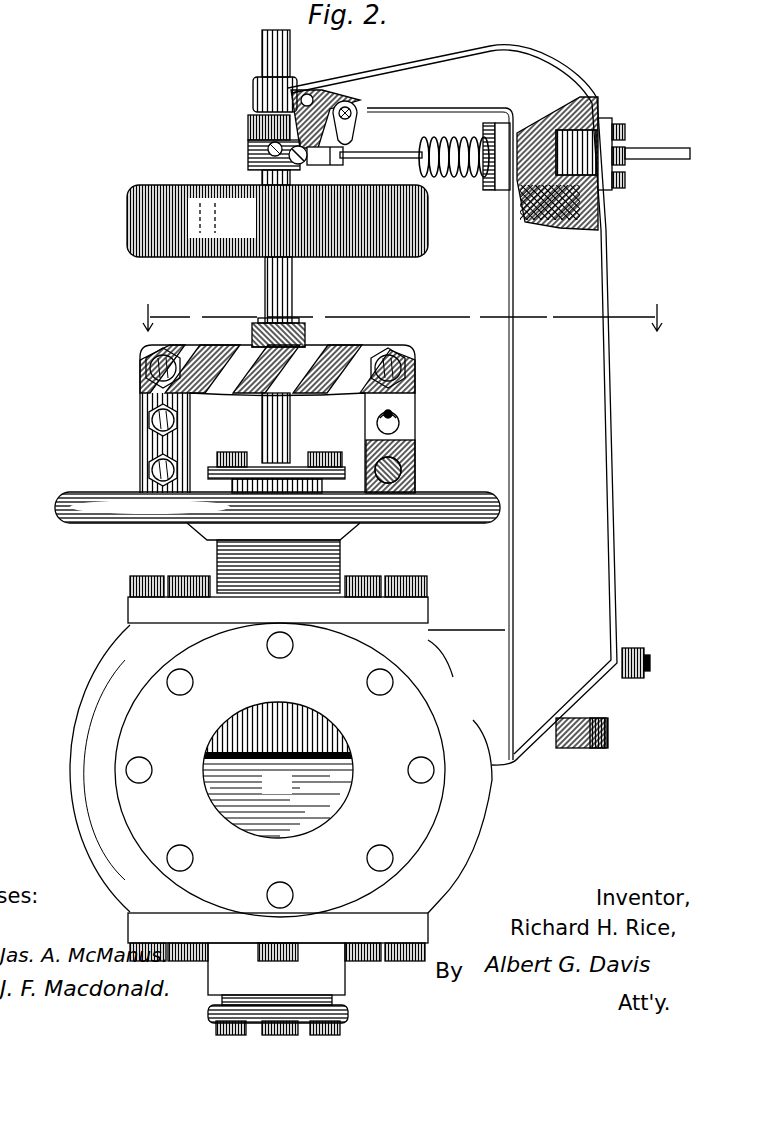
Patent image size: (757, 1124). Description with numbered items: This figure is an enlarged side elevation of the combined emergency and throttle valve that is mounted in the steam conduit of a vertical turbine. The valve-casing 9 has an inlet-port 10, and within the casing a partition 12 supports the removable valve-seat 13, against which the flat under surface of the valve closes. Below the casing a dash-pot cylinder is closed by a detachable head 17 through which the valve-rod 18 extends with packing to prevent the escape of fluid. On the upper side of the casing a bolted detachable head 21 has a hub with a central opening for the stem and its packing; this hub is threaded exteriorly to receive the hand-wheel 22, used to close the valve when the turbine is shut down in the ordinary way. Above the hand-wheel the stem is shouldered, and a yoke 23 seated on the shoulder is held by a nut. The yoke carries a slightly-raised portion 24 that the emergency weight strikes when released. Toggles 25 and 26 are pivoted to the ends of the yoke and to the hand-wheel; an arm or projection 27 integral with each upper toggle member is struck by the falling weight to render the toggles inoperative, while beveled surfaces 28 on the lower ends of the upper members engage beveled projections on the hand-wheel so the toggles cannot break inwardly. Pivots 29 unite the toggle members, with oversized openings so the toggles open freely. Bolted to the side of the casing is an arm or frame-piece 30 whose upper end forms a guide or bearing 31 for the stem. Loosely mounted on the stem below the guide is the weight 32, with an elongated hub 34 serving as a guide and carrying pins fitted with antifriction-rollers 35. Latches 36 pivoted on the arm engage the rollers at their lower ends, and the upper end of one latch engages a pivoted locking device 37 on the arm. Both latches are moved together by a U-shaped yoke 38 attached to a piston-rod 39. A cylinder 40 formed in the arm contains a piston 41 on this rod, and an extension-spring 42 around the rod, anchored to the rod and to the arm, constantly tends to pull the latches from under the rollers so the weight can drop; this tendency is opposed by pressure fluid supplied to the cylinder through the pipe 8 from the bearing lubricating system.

The pipe 8 is at (653, 158).
The valve-casing 9 is at (76, 793).
The inlet-port 10 is at (350, 786).
The partition 12 is at (278, 800).
The removable valve-seat 13 is at (338, 753).
The detachable head 17 is at (191, 935).
The valve-rod 18 is at (216, 1026).
The detachable head 21 is at (216, 560).
The hand-wheel 22 is at (97, 499).
The yoke 23 is at (334, 385).
The slightly-raised portion 24 is at (305, 345).
The toggle 25 is at (145, 428).
The toggle 26 is at (416, 419).
The arm or projection 27 is at (356, 350).
The beveled surfaces 28 is at (416, 452).
The pivots 29 is at (416, 410).
The arm or frame-piece 30 is at (469, 405).
The guide or bearing 31 is at (253, 94).
The weight 32 is at (300, 228).
The elongated hub 34 is at (248, 127).
The antifriction-roller 35 is at (248, 153).
The latch 36 is at (326, 100).
The pivoted locking device 37 is at (355, 128).
The U-shaped yoke 38 is at (325, 166).
The piston-rod 39 is at (381, 144).
The cylinder 40 is at (598, 140).
The piston 41 is at (594, 122).
The extension-spring 42 is at (470, 172).